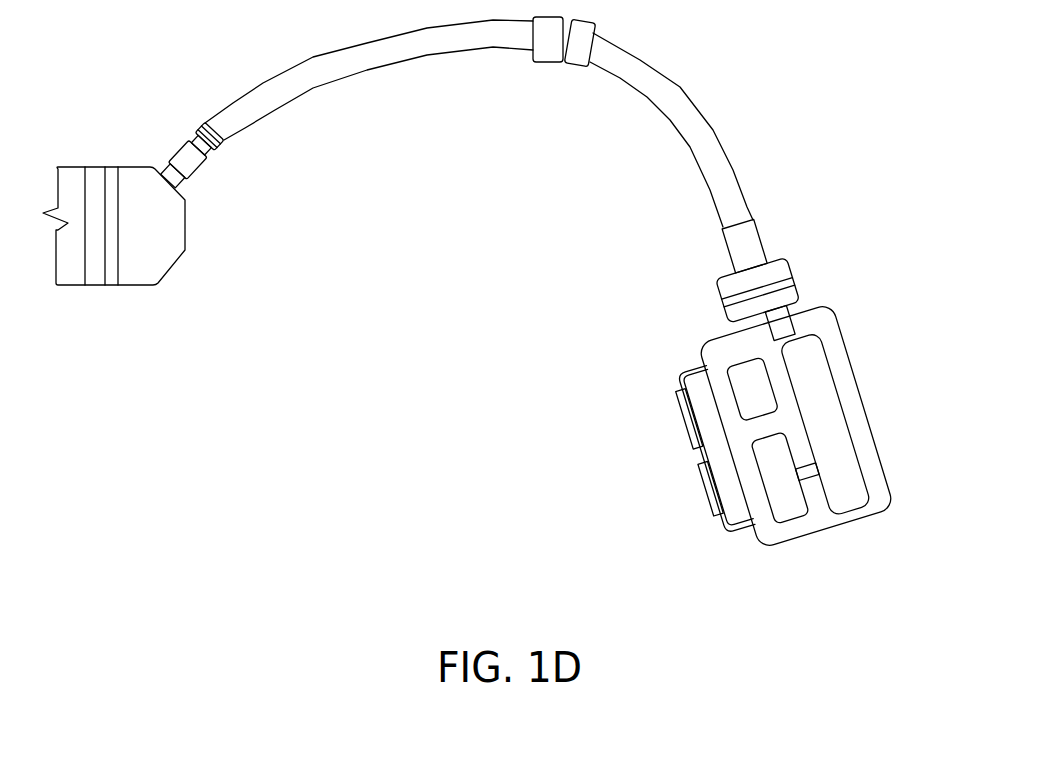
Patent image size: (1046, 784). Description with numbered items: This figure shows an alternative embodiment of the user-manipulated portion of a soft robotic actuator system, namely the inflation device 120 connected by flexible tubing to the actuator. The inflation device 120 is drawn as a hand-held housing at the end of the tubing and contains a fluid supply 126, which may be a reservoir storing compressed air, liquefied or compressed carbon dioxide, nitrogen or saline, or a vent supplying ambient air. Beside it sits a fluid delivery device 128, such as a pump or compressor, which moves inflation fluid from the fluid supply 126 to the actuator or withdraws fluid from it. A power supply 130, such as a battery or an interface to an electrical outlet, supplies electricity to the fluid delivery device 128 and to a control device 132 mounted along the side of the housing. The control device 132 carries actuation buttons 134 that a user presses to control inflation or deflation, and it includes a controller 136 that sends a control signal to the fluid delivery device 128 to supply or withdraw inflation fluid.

The inflation device 120 is at (827, 300).
The fluid supply 126 is at (822, 393).
The fluid delivery device 128 is at (780, 513).
The power supply 130 is at (748, 375).
The control device 132 is at (730, 533).
The actuation buttons 134 is at (677, 413).
The controller 136 is at (680, 378).